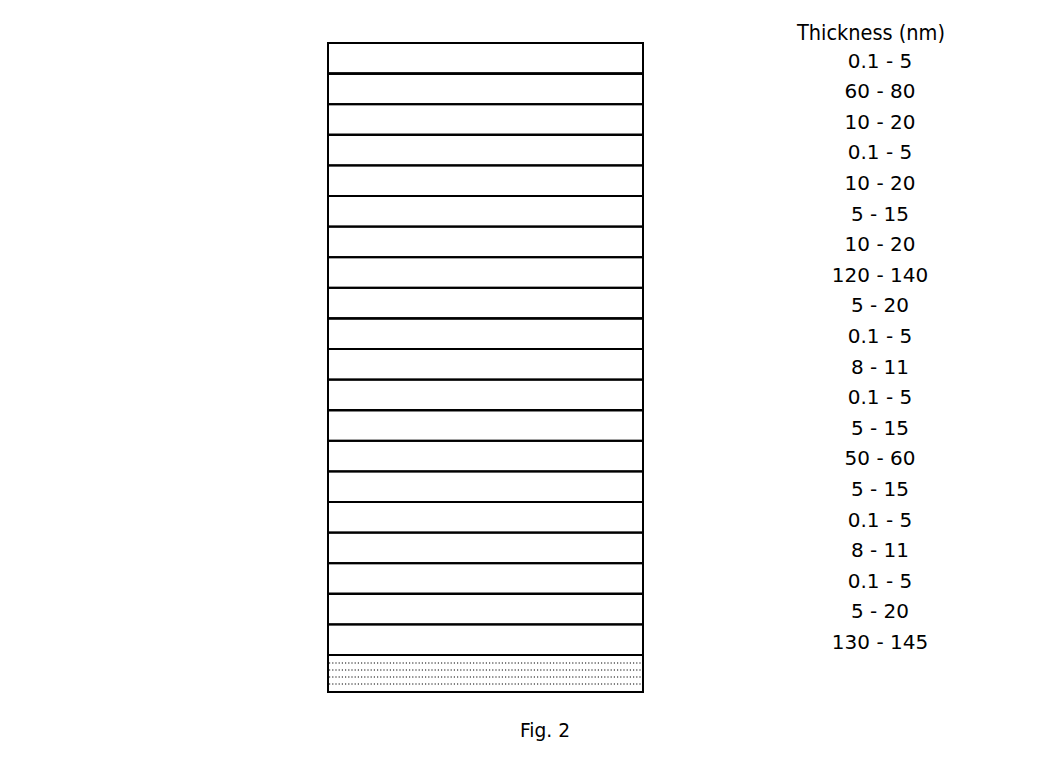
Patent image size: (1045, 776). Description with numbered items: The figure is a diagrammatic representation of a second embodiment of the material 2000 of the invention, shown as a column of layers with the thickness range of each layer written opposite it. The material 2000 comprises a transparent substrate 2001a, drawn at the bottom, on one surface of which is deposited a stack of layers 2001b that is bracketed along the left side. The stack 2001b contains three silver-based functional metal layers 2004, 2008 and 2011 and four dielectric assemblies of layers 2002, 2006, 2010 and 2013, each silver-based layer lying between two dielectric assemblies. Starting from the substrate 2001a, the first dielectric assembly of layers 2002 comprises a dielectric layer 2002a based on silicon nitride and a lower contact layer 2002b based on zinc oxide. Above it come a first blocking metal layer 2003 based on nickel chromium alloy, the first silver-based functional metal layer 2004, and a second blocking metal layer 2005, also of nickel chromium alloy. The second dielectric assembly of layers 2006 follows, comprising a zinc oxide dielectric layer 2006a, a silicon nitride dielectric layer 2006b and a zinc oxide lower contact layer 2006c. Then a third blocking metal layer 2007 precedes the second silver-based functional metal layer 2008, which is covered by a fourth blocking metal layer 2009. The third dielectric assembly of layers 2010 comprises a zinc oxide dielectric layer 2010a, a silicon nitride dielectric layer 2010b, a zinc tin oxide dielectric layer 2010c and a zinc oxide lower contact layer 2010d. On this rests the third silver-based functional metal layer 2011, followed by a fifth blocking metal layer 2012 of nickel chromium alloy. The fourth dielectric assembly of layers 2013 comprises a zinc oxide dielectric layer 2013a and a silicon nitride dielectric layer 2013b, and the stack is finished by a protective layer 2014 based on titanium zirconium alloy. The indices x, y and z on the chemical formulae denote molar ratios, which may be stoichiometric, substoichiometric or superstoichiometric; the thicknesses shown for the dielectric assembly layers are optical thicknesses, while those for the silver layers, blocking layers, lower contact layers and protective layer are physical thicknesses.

The material 2000 is at (197, 135).
The transparent substrate 2001a is at (643, 672).
The stack of layers 2001b is at (235, 655).
The first dielectric assembly of layers 2002 is at (323, 594).
The dielectric layer based on silicon nitride 2002a is at (643, 641).
The lower contact layer based on zinc oxide 2002b is at (643, 610).
The first blocking metal layer 2003 is at (643, 580).
The first silver-based functional metal layer 2004 is at (643, 549).
The second blocking metal layer 2005 is at (643, 519).
The second dielectric assembly of layers 2006 is at (323, 410).
The dielectric layer based on zinc oxide 2006a is at (643, 488).
The dielectric layer based on silicon nitride 2006b is at (643, 457).
The lower contact layer based on zinc oxide 2006c is at (643, 427).
The third blocking metal layer 2007 is at (643, 396).
The second silver-based functional metal layer 2008 is at (643, 366).
The fourth blocking metal layer 2009 is at (643, 335).
The third dielectric assembly of layers 2010 is at (323, 196).
The dielectric layer based on zinc oxide 2010a is at (643, 304).
The dielectric layer based on silicon nitride 2010b is at (643, 274).
The dielectric layer based on zinc tin oxide 2010c is at (643, 243).
The lower contact layer based on zinc oxide 2010d is at (643, 213).
The third silver-based functional metal layer 2011 is at (643, 182).
The fifth blocking metal layer 2012 is at (643, 151).
The fourth dielectric assembly of layers 2013 is at (323, 74).
The dielectric layer based on zinc oxide 2013a is at (643, 121).
The dielectric layer based on silicon nitride 2013b is at (643, 90).
The protective layer 2014 is at (643, 60).